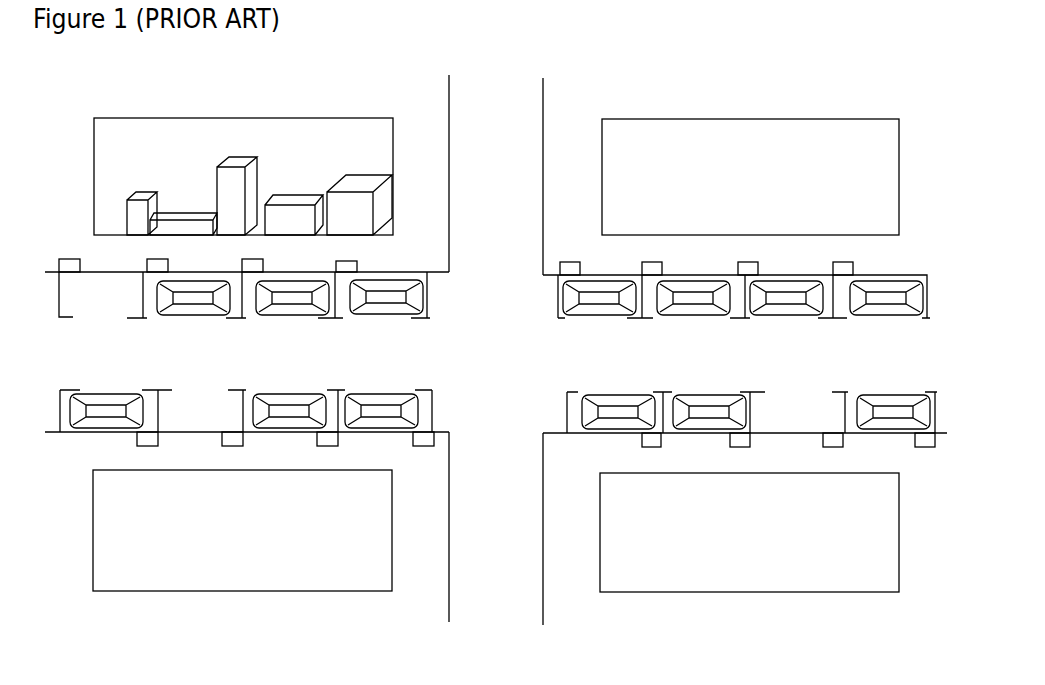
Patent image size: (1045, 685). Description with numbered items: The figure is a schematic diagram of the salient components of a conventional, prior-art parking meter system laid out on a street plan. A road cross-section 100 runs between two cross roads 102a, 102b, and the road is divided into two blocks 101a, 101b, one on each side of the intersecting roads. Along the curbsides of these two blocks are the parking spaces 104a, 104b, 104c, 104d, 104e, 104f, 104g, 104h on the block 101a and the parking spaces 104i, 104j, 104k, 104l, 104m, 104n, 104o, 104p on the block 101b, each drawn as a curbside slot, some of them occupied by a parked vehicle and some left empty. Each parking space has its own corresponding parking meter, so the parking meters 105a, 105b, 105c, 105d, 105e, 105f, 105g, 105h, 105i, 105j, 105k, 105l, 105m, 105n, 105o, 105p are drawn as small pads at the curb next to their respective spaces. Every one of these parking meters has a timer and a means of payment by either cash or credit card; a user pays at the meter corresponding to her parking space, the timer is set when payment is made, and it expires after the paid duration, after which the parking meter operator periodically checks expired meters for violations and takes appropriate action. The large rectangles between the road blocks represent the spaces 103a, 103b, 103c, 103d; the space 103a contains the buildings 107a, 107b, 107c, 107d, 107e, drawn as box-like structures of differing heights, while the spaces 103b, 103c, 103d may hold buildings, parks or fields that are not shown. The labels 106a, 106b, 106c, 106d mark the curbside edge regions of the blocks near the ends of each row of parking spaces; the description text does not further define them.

The cross-section 100 is at (492, 360).
The block 101a is at (247, 352).
The block 101b is at (745, 354).
The cross road 102a is at (496, 175).
The cross road 102b is at (496, 528).
The space 103a is at (187, 117).
The space 103b is at (690, 118).
The space 103c is at (200, 592).
The space 103d is at (690, 592).
The parking space 104a is at (73, 317).
The parking space 104b is at (162, 318).
The parking space 104c is at (258, 318).
The parking space 104d is at (350, 317).
The parking space 104e is at (138, 393).
The parking space 104f is at (243, 390).
The parking space 104g is at (338, 390).
The parking space 104h is at (428, 390).
The parking space 104i is at (576, 318).
The parking space 104j is at (722, 318).
The parking space 104k is at (812, 318).
The parking space 104l is at (892, 318).
The parking space 104m is at (594, 395).
The parking space 104n is at (722, 395).
The parking space 104o is at (840, 392).
The parking space 104p is at (917, 395).
The parking meter 105a is at (62, 258).
The parking meter 105b is at (150, 260).
The parking meter 105c is at (243, 262).
The parking meter 105d is at (340, 262).
The parking meter 105e is at (147, 446).
The parking meter 105f is at (222, 446).
The parking meter 105g is at (318, 442).
The parking meter 105h is at (414, 442).
The parking meter 105i is at (558, 271).
The parking meter 105j is at (645, 263).
The parking meter 105k is at (739, 263).
The parking meter 105l is at (835, 263).
The parking meter 105m is at (644, 446).
The parking meter 105n is at (731, 446).
The parking meter 105o is at (823, 445).
The parking meter 105p is at (916, 446).
The edge region 106a is at (403, 258).
The edge region 106b is at (891, 282).
The edge region 106c is at (89, 447).
The edge region 106d is at (592, 452).
The building 107a is at (137, 192).
The building 107b is at (172, 212).
The building 107c is at (229, 166).
The building 107d is at (290, 197).
The building 107e is at (362, 176).